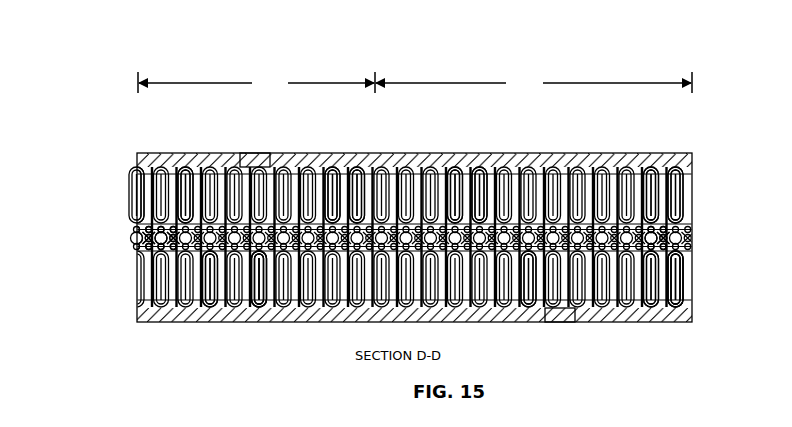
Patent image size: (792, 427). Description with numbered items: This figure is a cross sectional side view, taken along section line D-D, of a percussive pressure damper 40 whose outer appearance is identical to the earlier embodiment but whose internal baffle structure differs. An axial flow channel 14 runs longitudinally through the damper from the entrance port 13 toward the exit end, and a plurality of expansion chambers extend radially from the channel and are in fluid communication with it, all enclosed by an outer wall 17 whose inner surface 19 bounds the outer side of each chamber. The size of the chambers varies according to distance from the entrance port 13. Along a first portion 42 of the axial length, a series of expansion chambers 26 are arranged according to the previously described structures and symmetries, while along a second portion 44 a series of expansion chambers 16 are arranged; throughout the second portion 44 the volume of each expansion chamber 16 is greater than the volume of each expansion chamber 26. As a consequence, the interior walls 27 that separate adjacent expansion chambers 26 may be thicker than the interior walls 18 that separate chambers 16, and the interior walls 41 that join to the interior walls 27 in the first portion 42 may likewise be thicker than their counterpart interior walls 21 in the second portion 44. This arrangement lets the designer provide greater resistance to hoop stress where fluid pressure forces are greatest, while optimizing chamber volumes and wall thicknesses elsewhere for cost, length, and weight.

The pressure damper 40 is at (431, 28).
The first portion 42 is at (256, 82).
The second portion 44 is at (534, 82).
The entrance port 13 is at (140, 226).
The axial flow channel 14 is at (136, 240).
The expansion chambers 16 is at (458, 165).
The outer wall 17 is at (253, 160).
The interior walls 18 is at (484, 168).
The inner surface 19 is at (192, 172).
The interior walls 21 is at (542, 304).
The expansion chambers 26 is at (140, 184).
The interior walls 27 is at (349, 168).
The interior walls 41 is at (208, 296).